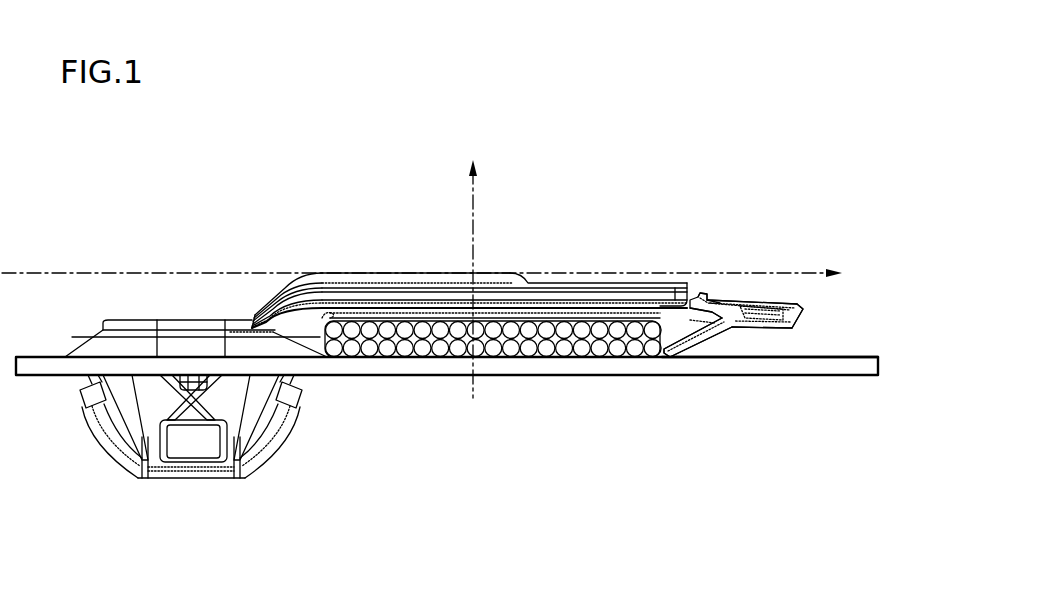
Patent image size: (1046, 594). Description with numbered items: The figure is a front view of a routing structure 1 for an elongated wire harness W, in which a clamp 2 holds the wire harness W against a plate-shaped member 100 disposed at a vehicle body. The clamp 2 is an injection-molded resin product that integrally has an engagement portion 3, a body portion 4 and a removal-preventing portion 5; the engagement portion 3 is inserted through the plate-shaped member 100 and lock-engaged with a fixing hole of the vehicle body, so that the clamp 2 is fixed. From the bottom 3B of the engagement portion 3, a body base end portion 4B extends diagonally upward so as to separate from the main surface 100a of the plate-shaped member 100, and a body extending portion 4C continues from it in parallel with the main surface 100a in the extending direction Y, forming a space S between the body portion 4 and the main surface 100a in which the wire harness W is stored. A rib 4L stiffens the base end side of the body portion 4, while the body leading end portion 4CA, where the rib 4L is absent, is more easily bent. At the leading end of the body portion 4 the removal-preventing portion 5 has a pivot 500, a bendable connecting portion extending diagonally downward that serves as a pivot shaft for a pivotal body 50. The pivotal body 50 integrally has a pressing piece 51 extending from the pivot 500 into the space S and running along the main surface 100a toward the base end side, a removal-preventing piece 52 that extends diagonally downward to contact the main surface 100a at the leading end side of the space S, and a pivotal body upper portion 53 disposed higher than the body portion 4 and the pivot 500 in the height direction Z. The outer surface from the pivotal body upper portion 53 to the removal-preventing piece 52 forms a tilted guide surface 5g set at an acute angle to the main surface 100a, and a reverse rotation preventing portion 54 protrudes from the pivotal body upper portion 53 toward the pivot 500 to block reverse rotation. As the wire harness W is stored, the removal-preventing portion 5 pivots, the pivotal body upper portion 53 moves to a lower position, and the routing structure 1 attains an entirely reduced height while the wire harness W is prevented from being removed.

The routing structure 1 is at (708, 130).
The clamp 2 is at (391, 263).
The engagement portion 3 is at (263, 462).
The bottom 3B is at (192, 322).
The body portion 4 is at (580, 268).
The body base end portion 4B is at (263, 318).
The body extending portion 4C is at (502, 270).
The body leading end portion 4CA is at (662, 300).
The rib 4L is at (437, 268).
The removal-preventing portion 5 is at (772, 334).
The tilted guide surface 5g is at (740, 328).
The pivotal body 50 is at (776, 338).
The pressing piece 51 is at (613, 297).
The removal-preventing piece 52 is at (723, 338).
The pivotal body upper portion 53 is at (781, 303).
The reverse rotation preventing portion 54 is at (728, 300).
The plate-shaped member 100 is at (838, 357).
The main surface 100a is at (799, 356).
The pivot 500 is at (703, 292).
The space S is at (686, 360).
The wire harness W is at (510, 345).
The extending direction Y is at (804, 272).
The height direction Z is at (476, 197).